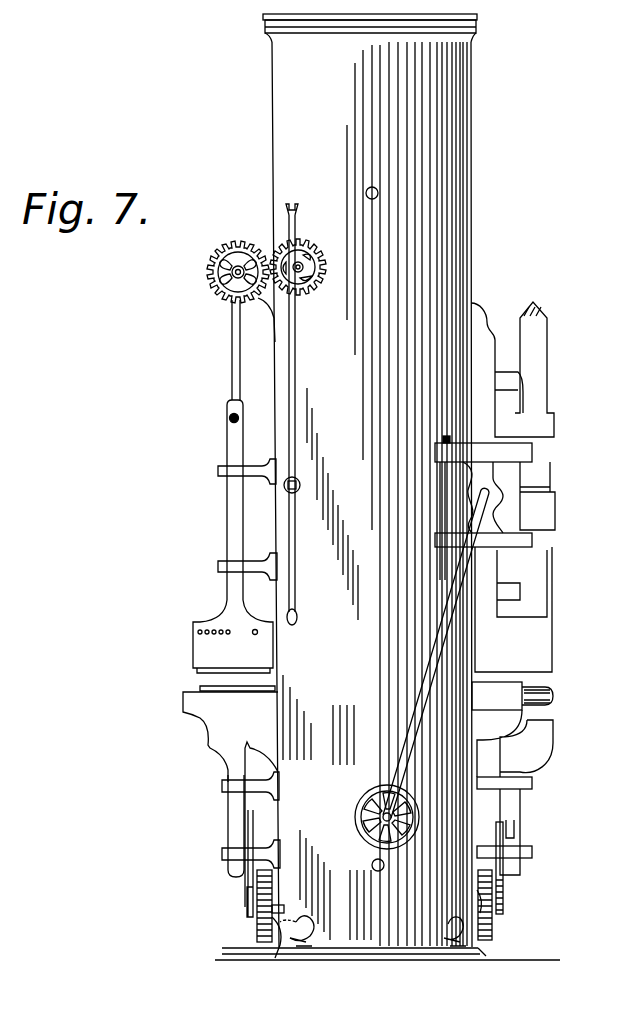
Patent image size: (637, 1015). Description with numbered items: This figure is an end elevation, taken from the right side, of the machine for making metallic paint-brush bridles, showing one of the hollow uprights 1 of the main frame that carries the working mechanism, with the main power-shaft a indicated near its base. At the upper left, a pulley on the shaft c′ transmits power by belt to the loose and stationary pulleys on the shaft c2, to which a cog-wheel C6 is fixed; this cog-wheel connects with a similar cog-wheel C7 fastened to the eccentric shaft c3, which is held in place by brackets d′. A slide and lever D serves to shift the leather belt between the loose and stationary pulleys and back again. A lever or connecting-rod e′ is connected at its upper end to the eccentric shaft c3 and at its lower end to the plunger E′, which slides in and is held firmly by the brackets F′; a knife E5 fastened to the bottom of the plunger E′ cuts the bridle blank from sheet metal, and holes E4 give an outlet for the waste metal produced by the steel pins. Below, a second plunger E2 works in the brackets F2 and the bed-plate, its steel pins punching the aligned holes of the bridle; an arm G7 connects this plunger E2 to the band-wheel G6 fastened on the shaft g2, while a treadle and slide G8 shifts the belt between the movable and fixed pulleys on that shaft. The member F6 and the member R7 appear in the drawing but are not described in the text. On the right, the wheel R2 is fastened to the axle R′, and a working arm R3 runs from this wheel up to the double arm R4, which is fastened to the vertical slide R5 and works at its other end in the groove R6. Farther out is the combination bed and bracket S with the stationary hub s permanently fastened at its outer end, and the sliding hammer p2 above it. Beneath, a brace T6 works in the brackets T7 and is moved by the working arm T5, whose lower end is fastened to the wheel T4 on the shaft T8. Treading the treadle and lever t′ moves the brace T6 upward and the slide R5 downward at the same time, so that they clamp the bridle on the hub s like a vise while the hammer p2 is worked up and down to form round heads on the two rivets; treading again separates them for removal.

The hollow upright 1 is at (387, 487).
The shaft c′ is at (366, 193).
The cog-wheel C7 is at (243, 252).
The eccentric shaft c3 is at (222, 272).
The cog-wheel C6 is at (315, 284).
The shaft c2 is at (304, 268).
The bracket d′ is at (268, 310).
The connecting-rod e′ is at (231, 363).
The slide and lever D is at (297, 368).
The plunger E′ is at (232, 520).
The bracket F′ is at (220, 566).
The knife E5 is at (193, 660).
The hole E4 is at (256, 630).
The bracket F6 is at (183, 705).
The plunger E2 is at (228, 808).
The bracket F2 is at (258, 858).
The arm G7 is at (252, 888).
The band-wheel G6 is at (258, 930).
The shaft g2 is at (274, 950).
The treadle and slide G8 is at (310, 936).
The axle R′ is at (356, 818).
The wheel R2 is at (410, 812).
The main power-shaft a is at (372, 866).
The working arm R3 is at (410, 690).
The bracket bar R7 is at (448, 443).
The groove R6 is at (441, 512).
The double arm R4 is at (437, 541).
The sliding hammer p2 is at (510, 530).
The vertical slide R5 is at (513, 609).
The combination bed and bracket S is at (497, 696).
The stationary hub s is at (544, 698).
The brace T6 is at (515, 743).
The bracket T7 is at (528, 850).
The working arm T5 is at (505, 880).
The wheel T4 is at (493, 922).
The shaft T8 is at (478, 900).
The treadle and lever t′ is at (452, 936).